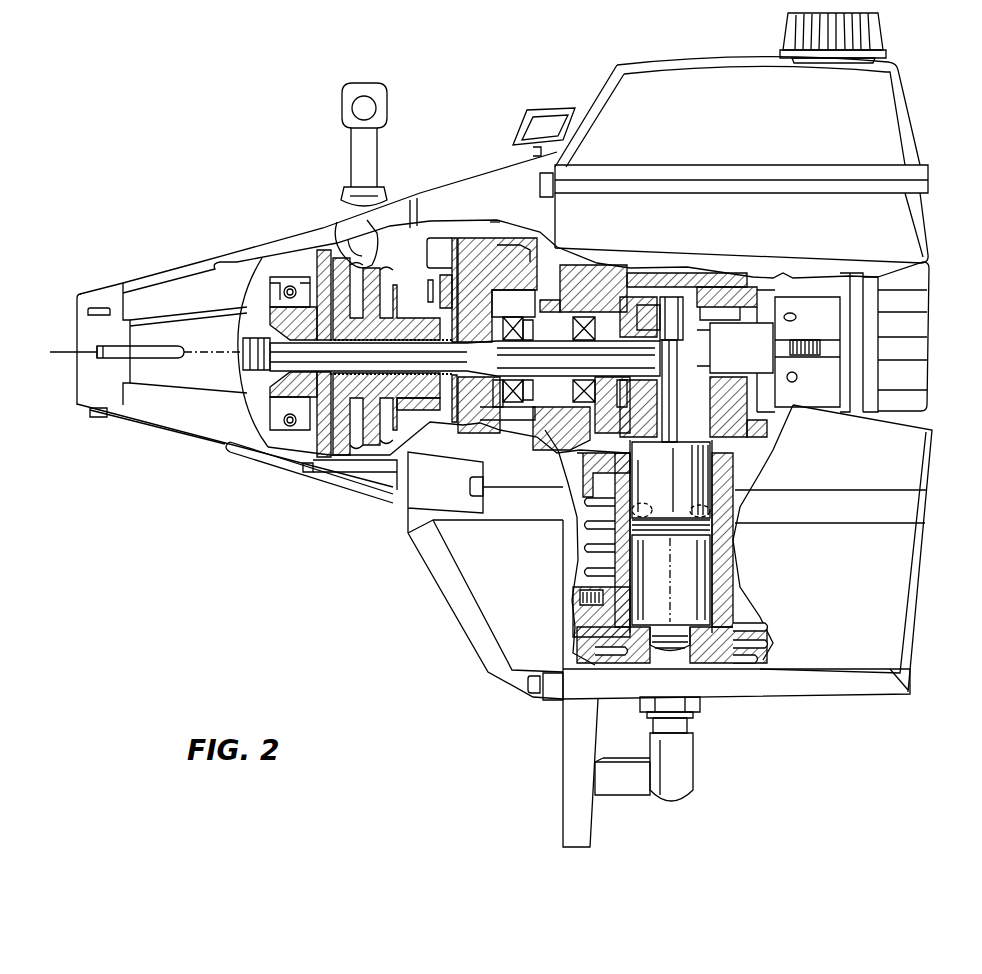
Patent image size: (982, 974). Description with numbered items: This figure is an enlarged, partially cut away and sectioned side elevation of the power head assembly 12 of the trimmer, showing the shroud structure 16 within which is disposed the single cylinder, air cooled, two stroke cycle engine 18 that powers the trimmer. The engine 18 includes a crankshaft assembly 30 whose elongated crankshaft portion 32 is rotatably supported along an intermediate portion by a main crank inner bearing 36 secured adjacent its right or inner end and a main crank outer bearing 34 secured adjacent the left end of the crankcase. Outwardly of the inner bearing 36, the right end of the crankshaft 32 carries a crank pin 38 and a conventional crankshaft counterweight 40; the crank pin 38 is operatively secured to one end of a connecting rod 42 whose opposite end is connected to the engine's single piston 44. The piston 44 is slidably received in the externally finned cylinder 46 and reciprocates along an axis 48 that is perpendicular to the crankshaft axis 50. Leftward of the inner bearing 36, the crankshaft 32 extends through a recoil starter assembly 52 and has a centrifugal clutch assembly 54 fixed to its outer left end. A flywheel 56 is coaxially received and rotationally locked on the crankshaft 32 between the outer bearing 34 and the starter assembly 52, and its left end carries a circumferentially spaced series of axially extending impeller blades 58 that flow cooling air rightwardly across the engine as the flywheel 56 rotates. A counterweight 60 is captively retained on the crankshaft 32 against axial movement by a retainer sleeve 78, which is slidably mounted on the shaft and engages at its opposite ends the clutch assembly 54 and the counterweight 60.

The power head assembly 12 is at (690, 46).
The shroud structure 16 is at (448, 178).
The engine 18 is at (618, 266).
The crankshaft assembly 30 is at (543, 326).
The crankshaft portion 32 is at (545, 440).
The main crank outer bearing 34 is at (508, 317).
The main crank inner bearing 36 is at (610, 283).
The crank pin 38 is at (713, 300).
The crankshaft counterweight 40 is at (663, 407).
The connecting rod 42 is at (680, 362).
The piston 44 is at (690, 547).
The cylinder 46 is at (720, 574).
The axis 48 is at (685, 603).
The crankshaft axis 50 is at (222, 350).
The recoil starter assembly 52 is at (337, 222).
The centrifugal clutch assembly 54 is at (260, 300).
The flywheel 56 is at (495, 222).
The impeller blades 58 is at (503, 247).
The counterweight 60 is at (453, 254).
The retainer sleeve 78 is at (398, 403).